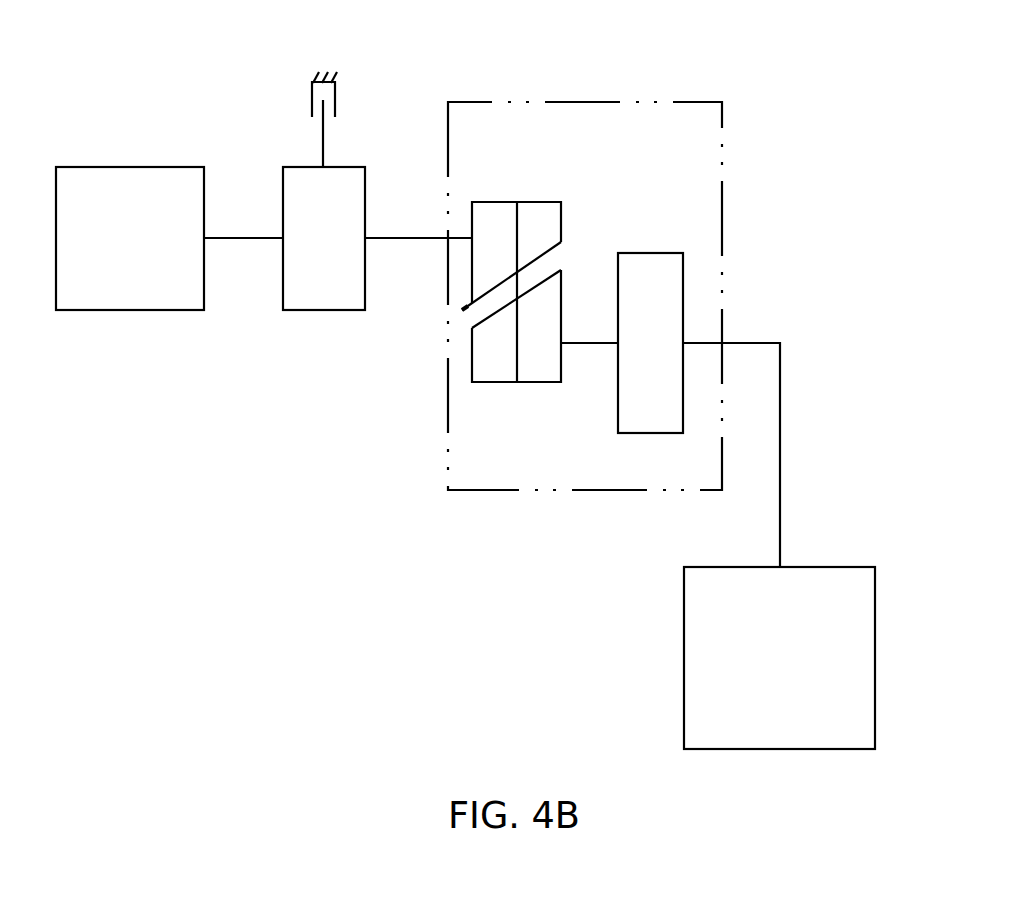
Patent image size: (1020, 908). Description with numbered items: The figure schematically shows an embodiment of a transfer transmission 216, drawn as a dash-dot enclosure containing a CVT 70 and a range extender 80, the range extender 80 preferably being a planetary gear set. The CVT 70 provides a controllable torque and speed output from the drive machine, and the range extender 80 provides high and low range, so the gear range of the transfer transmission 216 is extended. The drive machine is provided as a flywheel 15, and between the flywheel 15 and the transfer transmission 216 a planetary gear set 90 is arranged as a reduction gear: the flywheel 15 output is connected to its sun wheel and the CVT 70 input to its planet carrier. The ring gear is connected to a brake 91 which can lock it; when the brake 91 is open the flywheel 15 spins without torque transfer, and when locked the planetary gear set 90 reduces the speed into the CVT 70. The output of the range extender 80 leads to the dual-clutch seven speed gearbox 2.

The dual-clutch seven speed gearbox 2 is at (787, 750).
The flywheel 15 is at (125, 312).
The continuously variable transmission 70 is at (493, 382).
The range extender 80 is at (648, 433).
The planetary gear set 90 is at (318, 312).
The brake 91 is at (337, 80).
The transfer transmission 216 is at (590, 102).